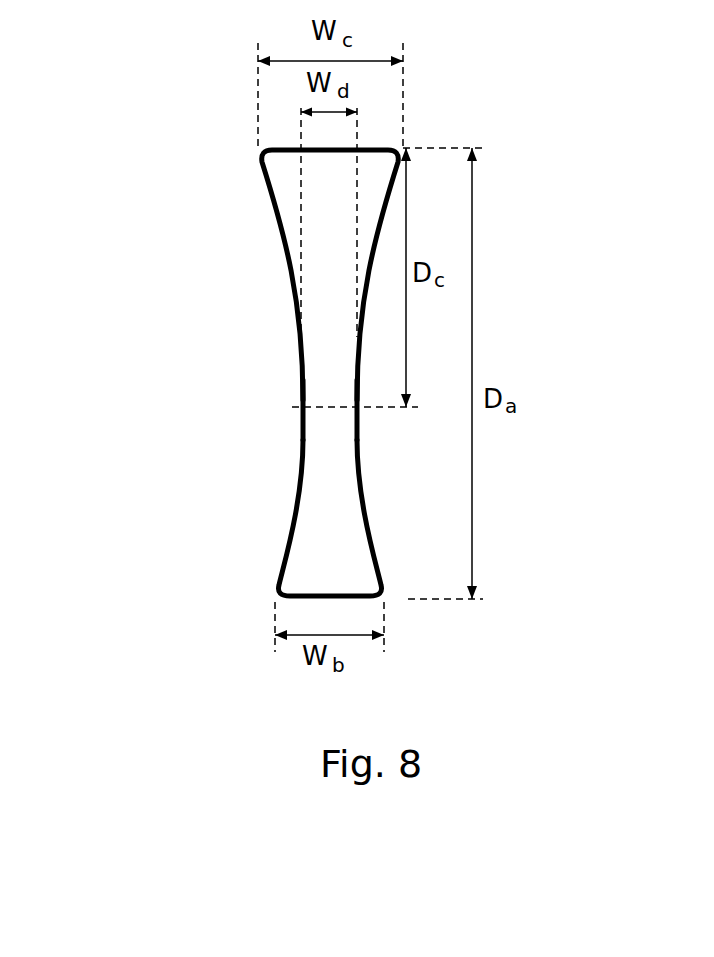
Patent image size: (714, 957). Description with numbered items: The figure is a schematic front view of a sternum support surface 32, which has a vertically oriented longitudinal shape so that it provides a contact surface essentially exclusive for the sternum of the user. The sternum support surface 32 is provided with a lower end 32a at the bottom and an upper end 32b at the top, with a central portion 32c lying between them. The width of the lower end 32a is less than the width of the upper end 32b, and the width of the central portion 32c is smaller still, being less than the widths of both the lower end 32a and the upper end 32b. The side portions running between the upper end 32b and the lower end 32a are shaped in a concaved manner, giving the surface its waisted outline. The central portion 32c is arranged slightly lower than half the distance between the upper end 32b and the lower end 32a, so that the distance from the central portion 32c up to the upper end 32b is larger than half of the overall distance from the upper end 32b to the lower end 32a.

The sternum support surface 32 is at (235, 373).
The lower end 32a is at (330, 596).
The upper end 32b is at (332, 152).
The central portion 32c is at (302, 380).